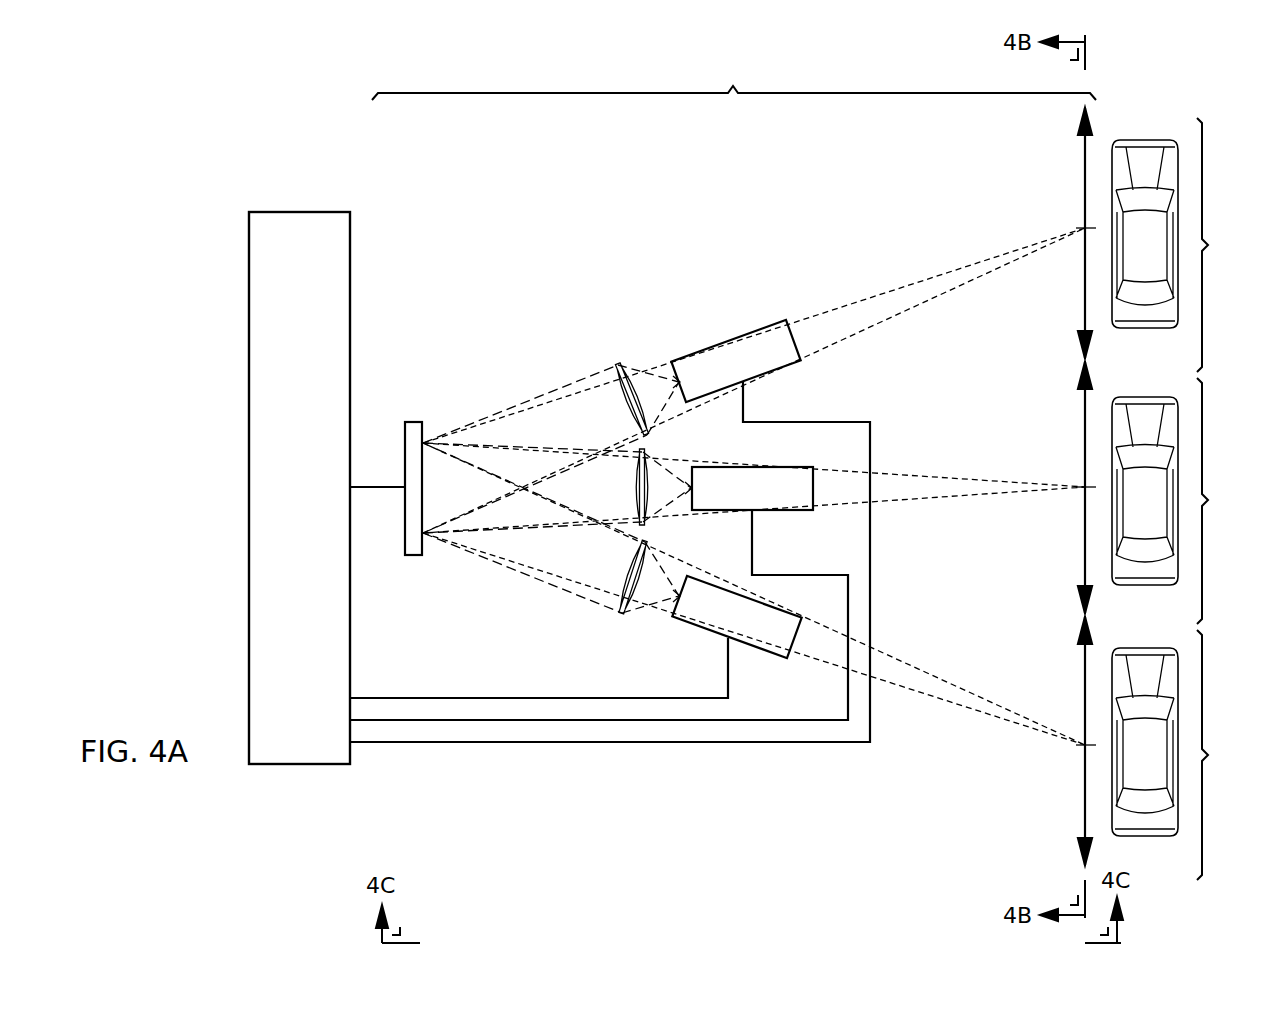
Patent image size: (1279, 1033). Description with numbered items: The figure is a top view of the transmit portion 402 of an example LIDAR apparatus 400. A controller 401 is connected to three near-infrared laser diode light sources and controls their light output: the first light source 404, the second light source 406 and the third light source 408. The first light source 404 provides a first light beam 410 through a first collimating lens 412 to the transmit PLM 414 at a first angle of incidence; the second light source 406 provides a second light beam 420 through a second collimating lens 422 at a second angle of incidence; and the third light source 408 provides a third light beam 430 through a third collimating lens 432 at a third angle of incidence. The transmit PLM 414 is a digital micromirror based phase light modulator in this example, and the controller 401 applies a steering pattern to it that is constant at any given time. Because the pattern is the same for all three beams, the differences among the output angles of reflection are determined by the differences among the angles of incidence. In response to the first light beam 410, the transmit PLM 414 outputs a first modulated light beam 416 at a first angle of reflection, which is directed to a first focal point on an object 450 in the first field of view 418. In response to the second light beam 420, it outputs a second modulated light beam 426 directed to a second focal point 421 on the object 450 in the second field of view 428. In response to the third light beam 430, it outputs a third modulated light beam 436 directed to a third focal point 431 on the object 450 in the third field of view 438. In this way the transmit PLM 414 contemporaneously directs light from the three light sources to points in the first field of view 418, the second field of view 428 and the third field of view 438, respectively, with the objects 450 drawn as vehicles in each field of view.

The LIDAR apparatus 400 is at (292, 92).
The controller 401 is at (318, 499).
The transmit portion 402 is at (734, 79).
The first light source 404 is at (720, 342).
The second light source 406 is at (792, 512).
The third light source 408 is at (700, 634).
The first light beam 410 is at (522, 402).
The first collimating lens 412 is at (617, 362).
The transmit PLM 414 is at (412, 421).
The first modulated light beam 416 is at (962, 684).
The first field of view 418 is at (1228, 755).
The second light beam 420 is at (568, 522).
The second focal point 421 is at (1076, 494).
The second collimating lens 422 is at (654, 456).
The second modulated light beam 426 is at (990, 472).
The second field of view 428 is at (1228, 501).
The third light beam 430 is at (562, 598).
The third focal point 431 is at (1076, 225).
The third collimating lens 432 is at (622, 618).
The third modulated light beam 436 is at (1030, 275).
The third field of view 438 is at (1228, 245).
The object 450 is at (1148, 137).